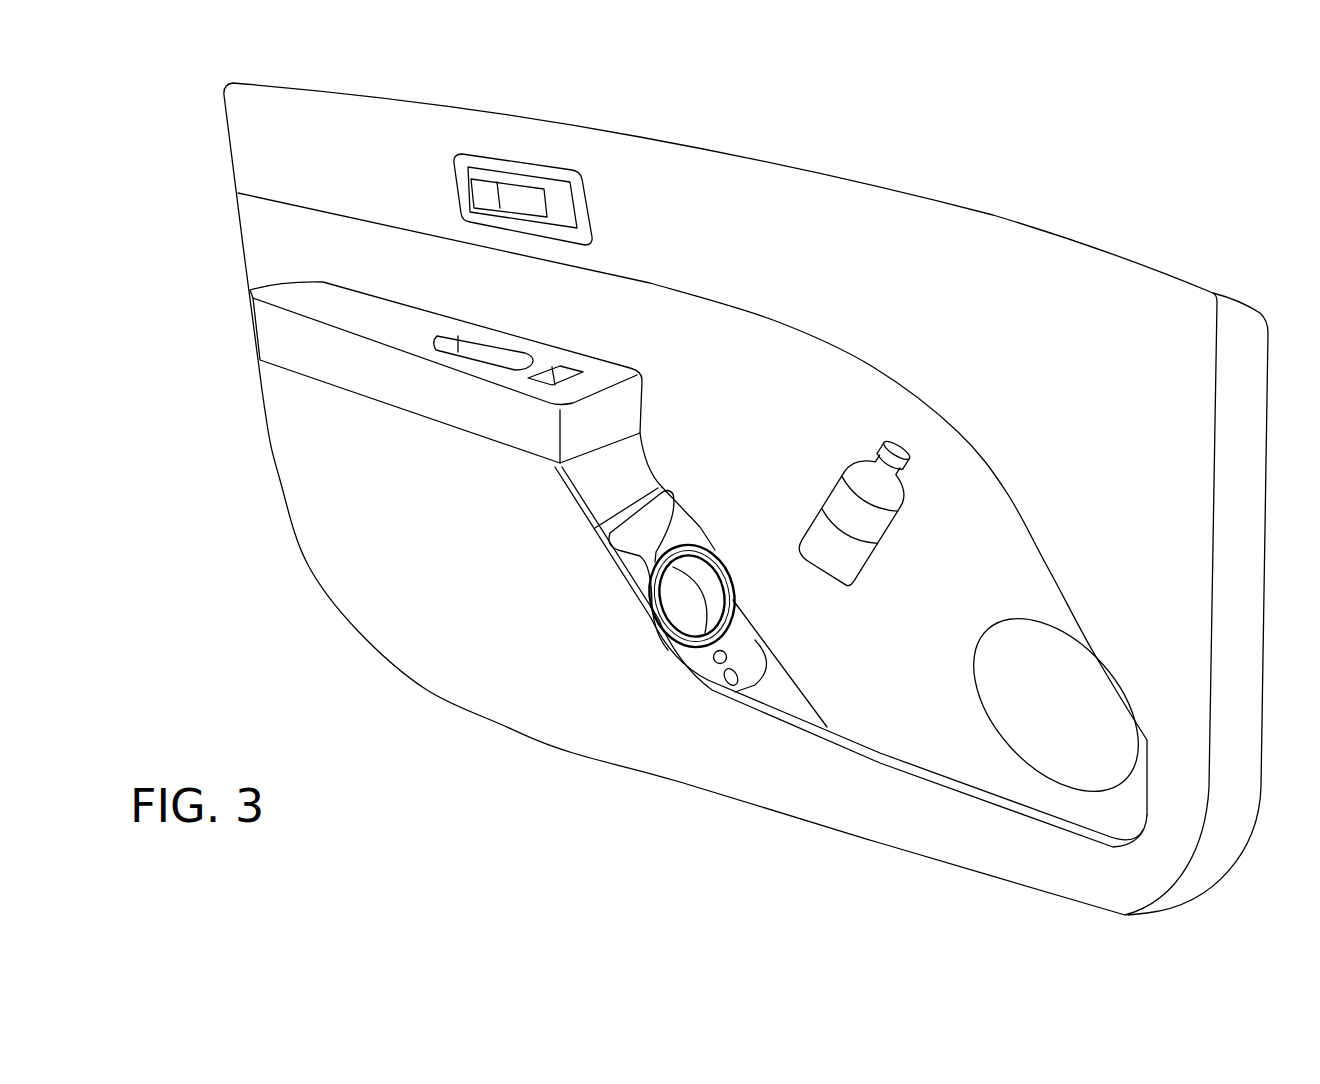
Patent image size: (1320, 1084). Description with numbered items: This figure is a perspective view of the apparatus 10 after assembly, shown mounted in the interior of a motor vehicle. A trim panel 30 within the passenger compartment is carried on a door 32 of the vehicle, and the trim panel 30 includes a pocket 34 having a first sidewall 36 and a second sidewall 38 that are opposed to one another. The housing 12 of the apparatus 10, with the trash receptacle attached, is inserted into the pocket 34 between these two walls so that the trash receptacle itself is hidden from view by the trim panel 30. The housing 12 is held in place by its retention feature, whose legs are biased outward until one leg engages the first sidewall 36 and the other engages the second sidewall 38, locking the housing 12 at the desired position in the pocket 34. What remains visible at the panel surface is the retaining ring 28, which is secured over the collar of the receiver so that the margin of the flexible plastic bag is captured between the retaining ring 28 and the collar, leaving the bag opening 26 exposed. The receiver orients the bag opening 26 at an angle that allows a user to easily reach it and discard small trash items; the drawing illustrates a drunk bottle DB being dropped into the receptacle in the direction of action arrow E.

The apparatus 10 is at (775, 612).
The housing 12 is at (632, 537).
The bag opening 26 is at (690, 615).
The retaining ring 28 is at (662, 627).
The trim panel 30 is at (507, 661).
The door 32 is at (995, 214).
The pocket 34 is at (611, 480).
The first sidewall 36 is at (655, 540).
The second sidewall 38 is at (767, 632).
The action arrow E is at (810, 563).
The drunk bottle DB is at (866, 528).